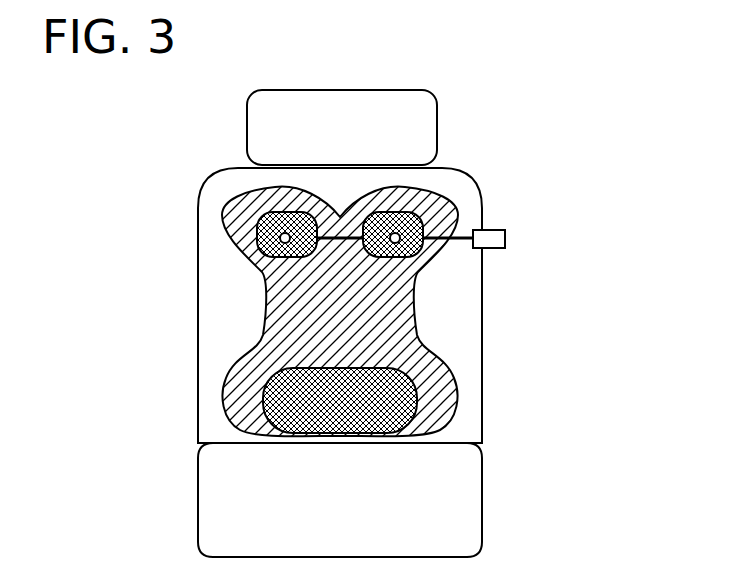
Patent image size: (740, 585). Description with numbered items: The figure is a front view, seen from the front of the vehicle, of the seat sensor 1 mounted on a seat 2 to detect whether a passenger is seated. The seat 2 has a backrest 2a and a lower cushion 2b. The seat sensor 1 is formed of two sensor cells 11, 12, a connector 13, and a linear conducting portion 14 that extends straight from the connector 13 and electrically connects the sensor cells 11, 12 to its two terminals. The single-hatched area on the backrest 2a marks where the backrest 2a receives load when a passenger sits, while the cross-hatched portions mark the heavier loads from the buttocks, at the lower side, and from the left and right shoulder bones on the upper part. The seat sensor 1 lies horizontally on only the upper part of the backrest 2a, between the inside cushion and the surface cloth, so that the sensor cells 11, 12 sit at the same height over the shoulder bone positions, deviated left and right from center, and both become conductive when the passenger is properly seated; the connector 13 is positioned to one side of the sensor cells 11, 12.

The seat sensor 1 is at (507, 220).
The seat 2 is at (384, 323).
The backrest 2a is at (475, 375).
The seat cushion 2b is at (475, 503).
The sensor cell 11 is at (293, 224).
The sensor cell 12 is at (393, 224).
The connector 13 is at (502, 248).
The linear conducting portion 14 is at (451, 213).